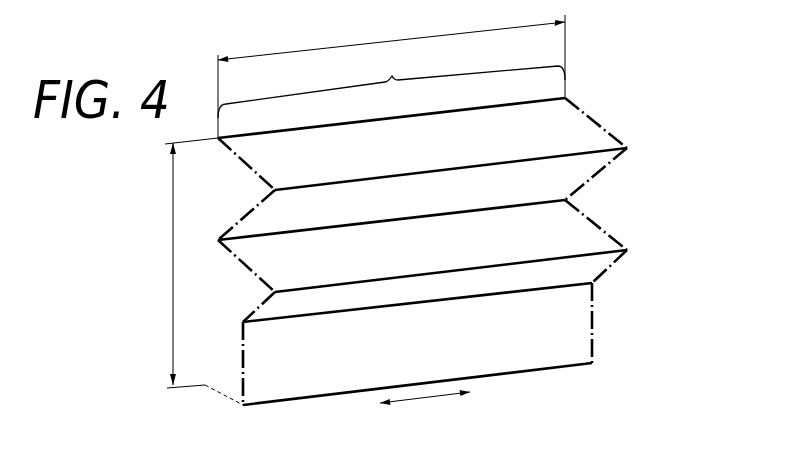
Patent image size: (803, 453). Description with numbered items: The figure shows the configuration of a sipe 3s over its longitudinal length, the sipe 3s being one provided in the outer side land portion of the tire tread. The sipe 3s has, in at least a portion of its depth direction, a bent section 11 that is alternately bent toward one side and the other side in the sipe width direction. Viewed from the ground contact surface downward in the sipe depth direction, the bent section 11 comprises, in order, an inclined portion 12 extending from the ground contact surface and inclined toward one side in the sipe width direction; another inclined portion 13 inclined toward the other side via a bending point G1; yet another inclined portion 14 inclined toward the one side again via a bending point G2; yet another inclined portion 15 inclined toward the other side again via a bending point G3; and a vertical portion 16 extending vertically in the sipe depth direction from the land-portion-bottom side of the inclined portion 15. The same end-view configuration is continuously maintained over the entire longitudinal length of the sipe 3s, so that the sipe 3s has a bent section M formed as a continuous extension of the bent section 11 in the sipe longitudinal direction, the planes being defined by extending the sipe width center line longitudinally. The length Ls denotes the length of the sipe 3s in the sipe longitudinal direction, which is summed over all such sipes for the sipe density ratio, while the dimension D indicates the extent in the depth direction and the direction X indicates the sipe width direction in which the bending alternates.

The sipe 3s is at (606, 94).
The bent section 11 is at (688, 98).
The inclined portion 12 is at (600, 123).
The inclined portion 13 is at (600, 171).
The inclined portion 14 is at (600, 229).
The inclined portion 15 is at (610, 267).
The vertical portion 16 is at (596, 314).
The bending point G1 is at (631, 150).
The bending point G2 is at (571, 200).
The bending point G3 is at (631, 252).
The length in the sipe longitudinal direction Ls is at (391, 76).
The bent section M is at (391, 86).
The depth D is at (199, 271).
The direction X is at (425, 406).